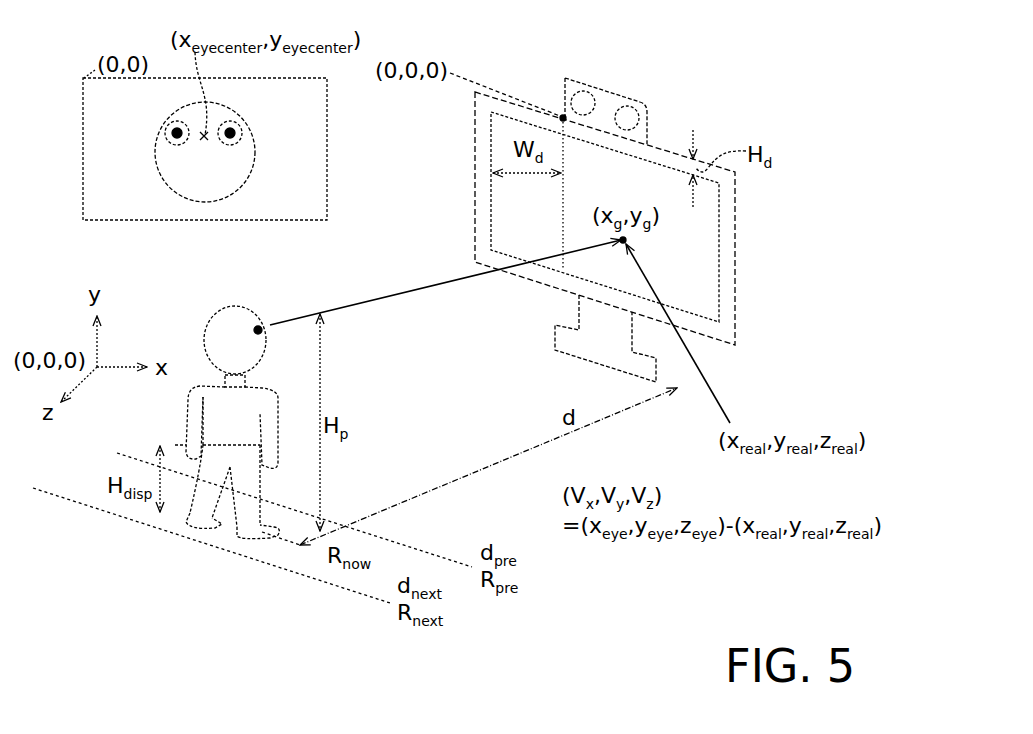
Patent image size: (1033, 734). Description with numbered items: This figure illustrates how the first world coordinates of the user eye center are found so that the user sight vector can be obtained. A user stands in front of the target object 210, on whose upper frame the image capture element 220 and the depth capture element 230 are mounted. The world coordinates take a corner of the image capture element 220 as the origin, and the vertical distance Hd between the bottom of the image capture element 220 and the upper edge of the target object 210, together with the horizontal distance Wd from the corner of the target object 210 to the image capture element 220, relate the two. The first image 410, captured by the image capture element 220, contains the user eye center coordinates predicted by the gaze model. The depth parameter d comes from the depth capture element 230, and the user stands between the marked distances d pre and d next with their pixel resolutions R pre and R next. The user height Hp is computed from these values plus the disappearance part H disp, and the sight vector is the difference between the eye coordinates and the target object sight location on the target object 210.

The target object 210 is at (736, 256).
The image capture element 220 is at (563, 112).
The depth capture element 230 is at (639, 115).
The first image 410 is at (205, 222).